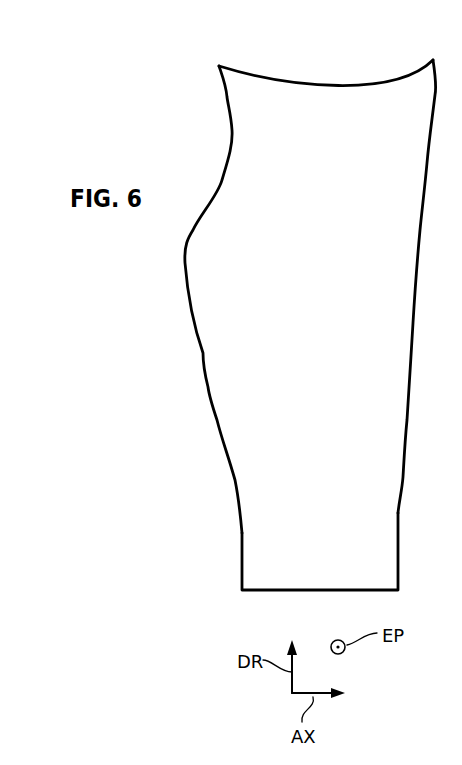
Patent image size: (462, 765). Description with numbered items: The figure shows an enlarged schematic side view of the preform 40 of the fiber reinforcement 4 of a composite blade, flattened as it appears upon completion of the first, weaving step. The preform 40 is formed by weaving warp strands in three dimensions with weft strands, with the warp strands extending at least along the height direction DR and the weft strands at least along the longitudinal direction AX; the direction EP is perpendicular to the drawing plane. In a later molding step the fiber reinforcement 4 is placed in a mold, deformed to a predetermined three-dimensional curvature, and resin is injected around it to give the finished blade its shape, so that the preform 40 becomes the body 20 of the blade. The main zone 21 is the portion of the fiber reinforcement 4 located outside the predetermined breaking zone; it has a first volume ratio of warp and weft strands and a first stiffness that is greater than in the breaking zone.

The fiber reinforcement 4 is at (314, 314).
The main zone 21 is at (380, 302).
The preform 40 is at (243, 377).
The body 20 is at (373, 533).